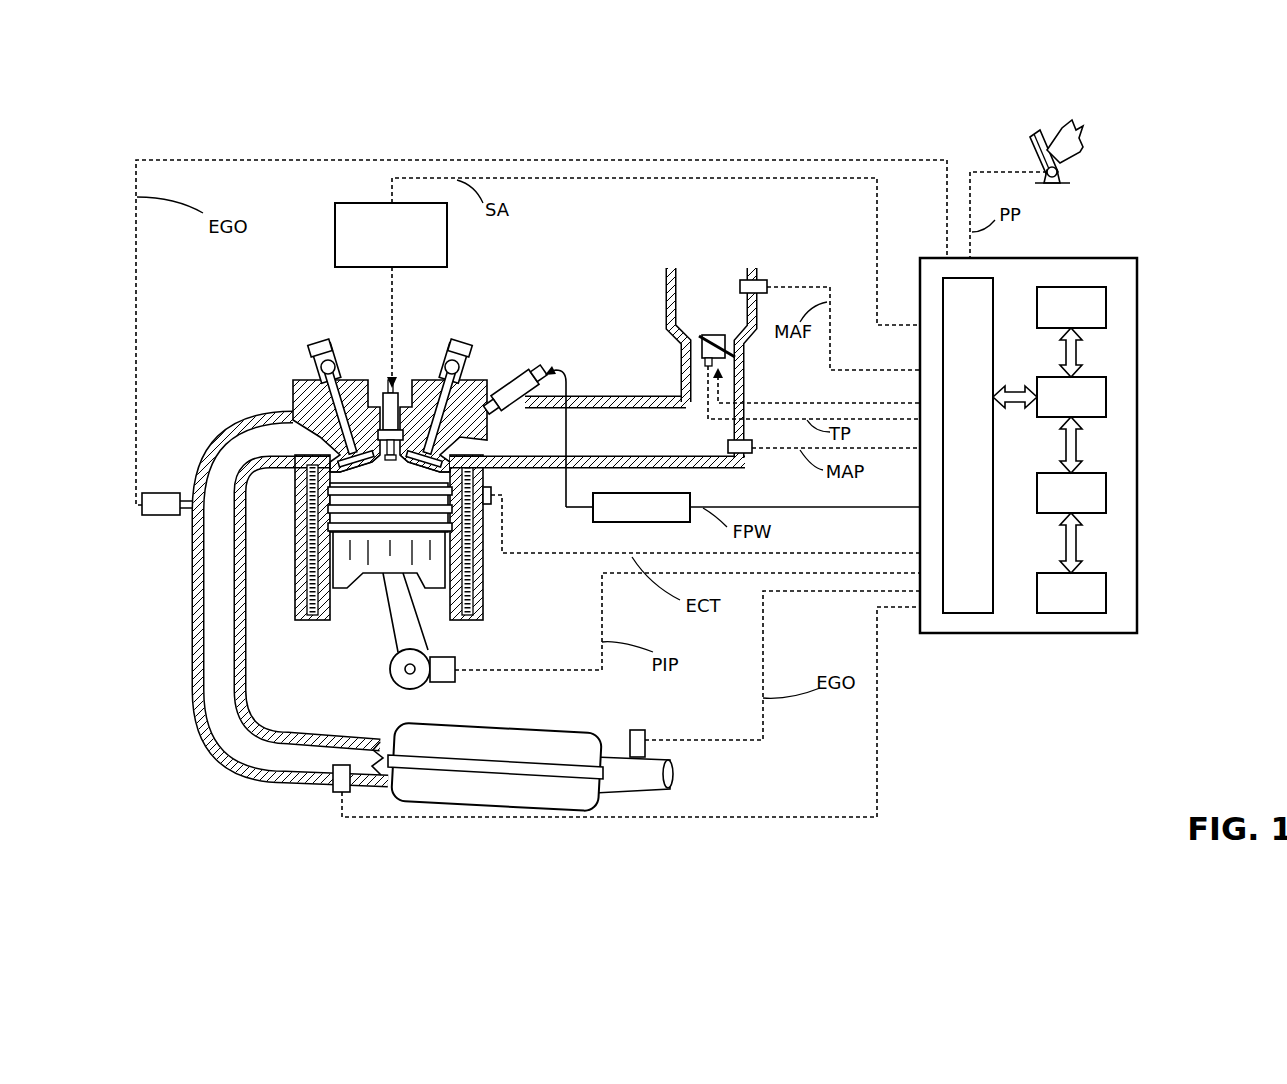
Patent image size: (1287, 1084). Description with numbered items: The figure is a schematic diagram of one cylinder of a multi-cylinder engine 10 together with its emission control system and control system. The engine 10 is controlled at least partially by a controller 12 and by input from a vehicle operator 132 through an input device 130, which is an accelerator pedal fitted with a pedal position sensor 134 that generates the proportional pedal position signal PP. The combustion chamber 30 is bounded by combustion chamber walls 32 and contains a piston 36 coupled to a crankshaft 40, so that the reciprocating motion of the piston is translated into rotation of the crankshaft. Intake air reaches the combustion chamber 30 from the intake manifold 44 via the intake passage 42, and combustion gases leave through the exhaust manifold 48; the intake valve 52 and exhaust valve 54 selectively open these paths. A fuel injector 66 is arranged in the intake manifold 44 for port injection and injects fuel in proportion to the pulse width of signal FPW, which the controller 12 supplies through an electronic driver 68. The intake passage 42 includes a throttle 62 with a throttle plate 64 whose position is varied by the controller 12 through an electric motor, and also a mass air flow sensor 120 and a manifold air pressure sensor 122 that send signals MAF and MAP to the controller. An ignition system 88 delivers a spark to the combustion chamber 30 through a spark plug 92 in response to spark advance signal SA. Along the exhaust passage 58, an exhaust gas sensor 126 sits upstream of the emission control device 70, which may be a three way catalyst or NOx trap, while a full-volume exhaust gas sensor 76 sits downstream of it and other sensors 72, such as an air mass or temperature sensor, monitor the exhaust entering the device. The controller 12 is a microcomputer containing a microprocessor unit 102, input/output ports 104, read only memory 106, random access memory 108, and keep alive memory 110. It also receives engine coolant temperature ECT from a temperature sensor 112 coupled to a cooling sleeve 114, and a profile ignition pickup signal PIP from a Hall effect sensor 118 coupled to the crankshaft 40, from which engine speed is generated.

The engine 10 is at (361, 484).
The controller 12 is at (1072, 433).
The combustion chamber 30 is at (390, 478).
The combustion chamber walls 32 is at (337, 605).
The piston 36 is at (392, 565).
The crankshaft 40 is at (398, 688).
The intake passage 42 is at (699, 311).
The intake manifold 44 is at (639, 444).
The exhaust manifold 48 is at (249, 449).
The intake valve 52 is at (428, 452).
The exhaust valve 54 is at (347, 450).
The exhaust passage 58 is at (233, 762).
The throttle 62 is at (728, 346).
The throttle plate 64 is at (697, 340).
The fuel injector 66 is at (518, 372).
The electronic driver 68 is at (620, 522).
The emission control device 70 is at (560, 735).
The sensors 72 is at (330, 785).
The full-volume exhaust gas sensor 76 is at (637, 729).
The ignition system 88 is at (345, 204).
The spark plug 92 is at (394, 385).
The microprocessor unit 102 is at (1108, 402).
The input/output ports 104 is at (997, 287).
The read only memory 106 is at (1108, 303).
The random access memory 108 is at (1108, 495).
The keep alive memory 110 is at (1108, 598).
The temperature sensor 112 is at (493, 498).
The cooling sleeve 114 is at (466, 575).
The Hall effect sensor 118 is at (443, 685).
The mass air flow sensor 120 is at (758, 280).
The manifold air pressure sensor 122 is at (752, 455).
The exhaust gas sensor 126 is at (137, 500).
The input device 130 is at (1030, 147).
The vehicle operator 132 is at (1082, 130).
The pedal position sensor 134 is at (1060, 170).